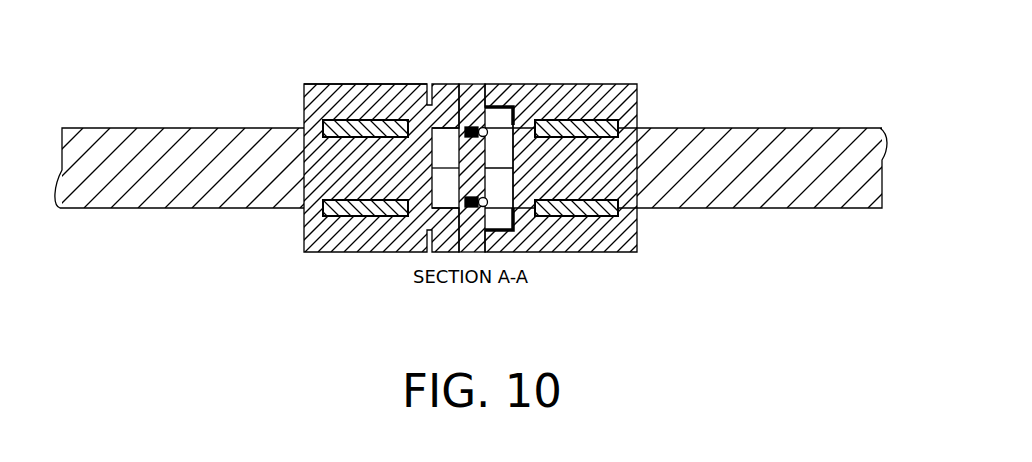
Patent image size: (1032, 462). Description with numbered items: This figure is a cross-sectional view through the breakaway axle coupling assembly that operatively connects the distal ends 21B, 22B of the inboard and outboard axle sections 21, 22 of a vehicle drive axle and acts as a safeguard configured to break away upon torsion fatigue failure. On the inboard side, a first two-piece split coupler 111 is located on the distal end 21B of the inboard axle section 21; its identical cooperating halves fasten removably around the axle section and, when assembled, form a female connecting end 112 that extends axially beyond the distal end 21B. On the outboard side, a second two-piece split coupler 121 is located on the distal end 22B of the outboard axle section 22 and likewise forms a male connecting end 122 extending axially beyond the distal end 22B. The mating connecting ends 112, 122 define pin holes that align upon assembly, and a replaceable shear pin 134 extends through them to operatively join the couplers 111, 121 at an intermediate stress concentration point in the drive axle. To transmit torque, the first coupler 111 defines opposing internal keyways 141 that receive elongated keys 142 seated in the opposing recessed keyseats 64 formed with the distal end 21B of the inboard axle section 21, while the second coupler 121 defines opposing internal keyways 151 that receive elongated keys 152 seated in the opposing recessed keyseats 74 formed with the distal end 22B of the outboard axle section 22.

The inboard axle section 21 is at (777, 150).
The outboard axle section 22 is at (195, 127).
The distal end of the inboard axle section 21B is at (520, 240).
The distal end of the outboard axle section 22B is at (418, 232).
The first two-piece split coupler 111 is at (600, 84).
The female connecting end 112 is at (500, 92).
The second two-piece split coupler 121 is at (337, 90).
The male connecting end 122 is at (395, 100).
The shear pin 134 is at (473, 92).
The internal keyways 141 is at (607, 116).
The elongated keys 142 is at (647, 117).
The internal keyways 151 is at (330, 112).
The elongated keys 152 is at (322, 130).
The recessed keyseats 64 is at (567, 197).
The recessed keyseats 74 is at (384, 198).